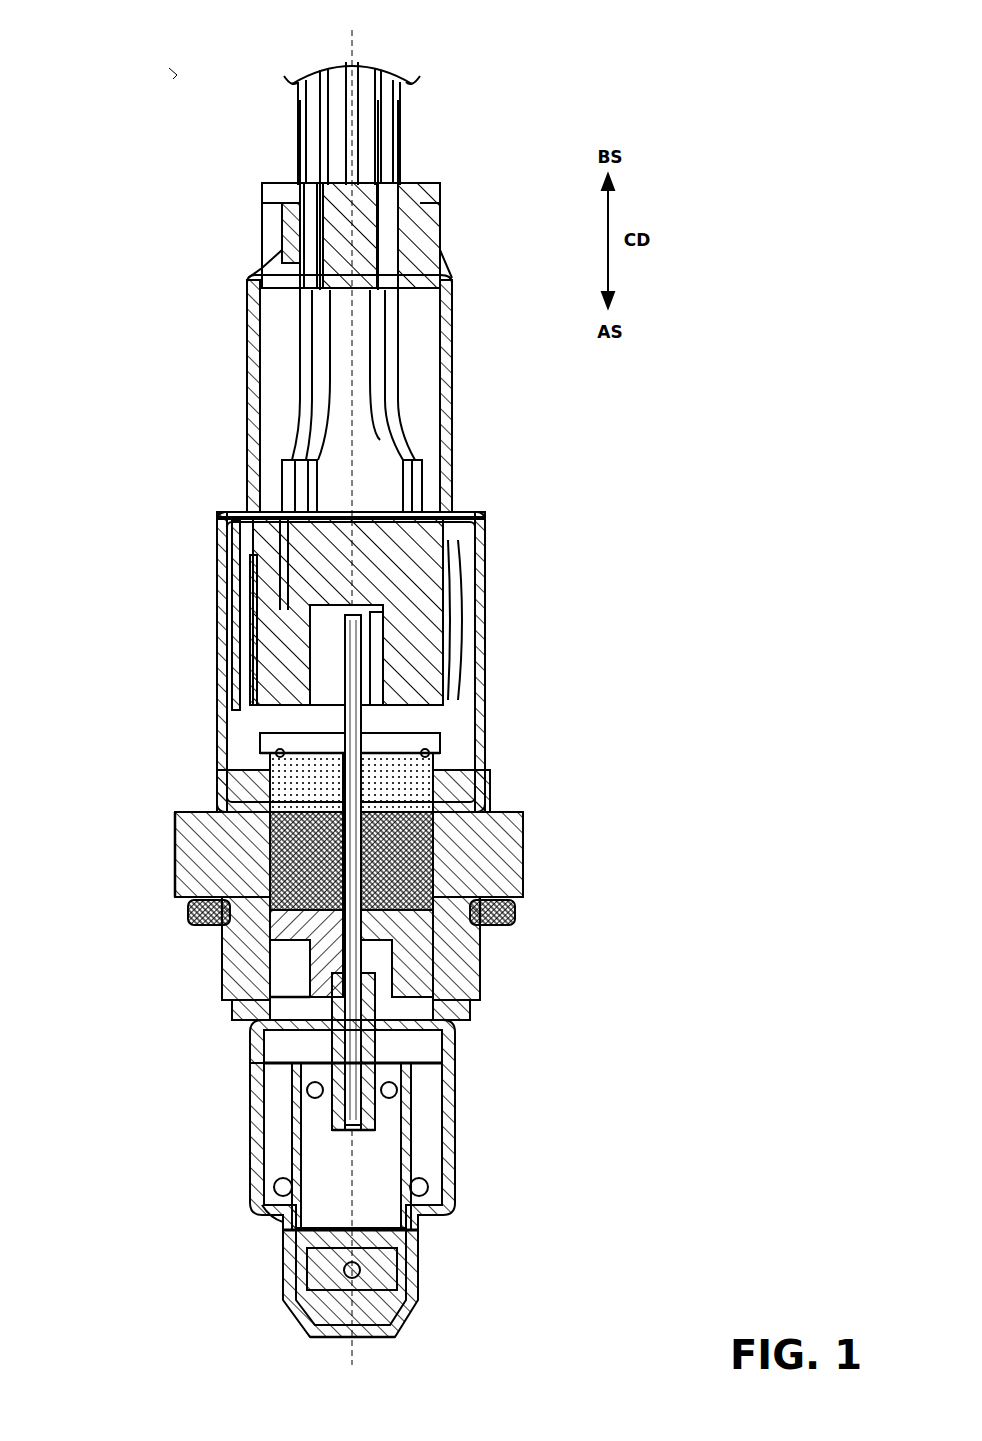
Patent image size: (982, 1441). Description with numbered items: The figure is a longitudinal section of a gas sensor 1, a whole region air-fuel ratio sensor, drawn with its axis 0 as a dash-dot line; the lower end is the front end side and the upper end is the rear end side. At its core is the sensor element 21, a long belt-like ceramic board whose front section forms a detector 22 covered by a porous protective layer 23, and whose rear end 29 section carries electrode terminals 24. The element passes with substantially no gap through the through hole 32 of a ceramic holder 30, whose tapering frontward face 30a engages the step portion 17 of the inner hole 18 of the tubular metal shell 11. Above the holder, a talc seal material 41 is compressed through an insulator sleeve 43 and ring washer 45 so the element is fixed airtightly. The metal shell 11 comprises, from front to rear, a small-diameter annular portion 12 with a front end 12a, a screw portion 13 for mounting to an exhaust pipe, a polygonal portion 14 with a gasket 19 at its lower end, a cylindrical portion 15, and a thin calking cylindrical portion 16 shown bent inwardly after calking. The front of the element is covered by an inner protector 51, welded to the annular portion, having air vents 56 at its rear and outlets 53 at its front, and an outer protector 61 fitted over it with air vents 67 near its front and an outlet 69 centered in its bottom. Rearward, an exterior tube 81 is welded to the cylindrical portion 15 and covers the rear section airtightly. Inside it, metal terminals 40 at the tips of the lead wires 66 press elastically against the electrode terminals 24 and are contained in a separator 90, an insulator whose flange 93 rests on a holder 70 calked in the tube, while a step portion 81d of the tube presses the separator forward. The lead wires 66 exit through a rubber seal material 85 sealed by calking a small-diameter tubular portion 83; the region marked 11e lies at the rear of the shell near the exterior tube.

The gas sensor 1 is at (175, 72).
The axis 0 is at (448, 1250).
The lead wires 66 is at (300, 120).
The seal material 85 is at (268, 195).
The small-diameter tubular portion 83 is at (290, 245).
The exterior tube 81 is at (222, 637).
The step portion 81d is at (222, 512).
The flange 93 is at (235, 530).
The rear end 29 is at (252, 548).
The metal terminals 40 is at (222, 585).
The electrode terminals 24 is at (235, 612).
The holder 70 is at (228, 668).
The separator 90 is at (483, 525).
The calking cylindrical portion 16 is at (228, 708).
The ring washer 45 is at (222, 748).
The metal shell 11 is at (374, 895).
The cylindrical portion 15 is at (210, 800).
The polygonal portion 14 is at (178, 875).
The seal material 41 is at (175, 855).
The screw portion 13 is at (222, 965).
The gasket 19 is at (190, 928).
The sleeve 43 is at (487, 795).
The through hole 32 is at (528, 858).
The ceramic holder 30 is at (480, 958).
The frontward face 30a is at (230, 997).
The step portion 17 is at (470, 975).
The sensor element 21 is at (385, 1014).
The inner hole 18 is at (400, 1053).
The detector 22 is at (440, 1100).
The protective layer 23 is at (380, 1133).
The annular portion 12 is at (250, 1040).
The front end 12a is at (250, 1087).
The protector 51 is at (262, 1155).
The air vents 56 is at (262, 1108).
The protector 61 is at (258, 1130).
The air vents 67 is at (250, 1200).
The outlets 53 is at (400, 1275).
The outlet 69 is at (375, 1345).
The shell rear end 11e is at (485, 727).